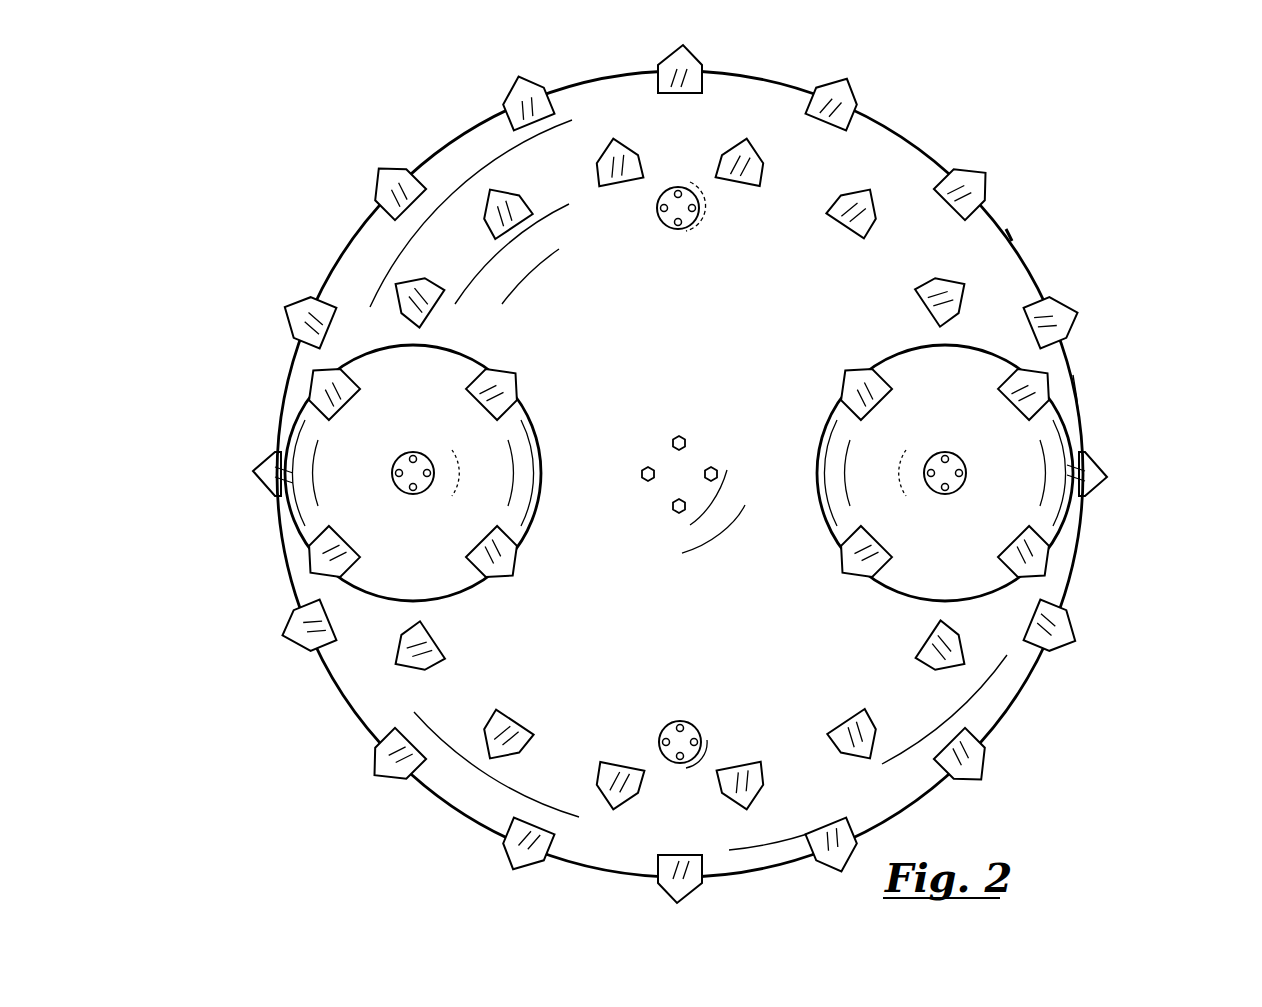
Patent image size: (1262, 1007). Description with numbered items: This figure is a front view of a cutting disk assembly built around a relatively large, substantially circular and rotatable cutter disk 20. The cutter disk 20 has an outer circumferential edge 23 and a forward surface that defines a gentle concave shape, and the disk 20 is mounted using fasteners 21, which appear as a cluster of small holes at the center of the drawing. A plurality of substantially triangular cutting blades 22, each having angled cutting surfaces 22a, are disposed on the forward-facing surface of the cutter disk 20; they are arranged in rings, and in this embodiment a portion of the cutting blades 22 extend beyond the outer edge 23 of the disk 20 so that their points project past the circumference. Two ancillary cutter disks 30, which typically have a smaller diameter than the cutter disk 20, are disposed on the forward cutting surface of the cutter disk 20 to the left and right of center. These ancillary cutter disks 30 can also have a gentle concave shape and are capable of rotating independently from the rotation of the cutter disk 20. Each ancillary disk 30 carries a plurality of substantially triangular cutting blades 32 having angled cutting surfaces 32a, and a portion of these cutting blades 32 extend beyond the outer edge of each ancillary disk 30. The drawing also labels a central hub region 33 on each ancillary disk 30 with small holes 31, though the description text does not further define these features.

The cutter disk 20 is at (920, 735).
The fasteners 21 is at (684, 443).
The cutting blades 22 is at (398, 178).
The angled cutting surfaces 22a is at (396, 180).
The outer circumferential edge 23 is at (1076, 402).
The ancillary cutter disks 30 is at (338, 493).
The hub bolt holes 31 is at (431, 473).
The cutting blades 32 is at (490, 388).
The angled cutting surfaces 32a is at (516, 547).
The hub 33 is at (408, 455).